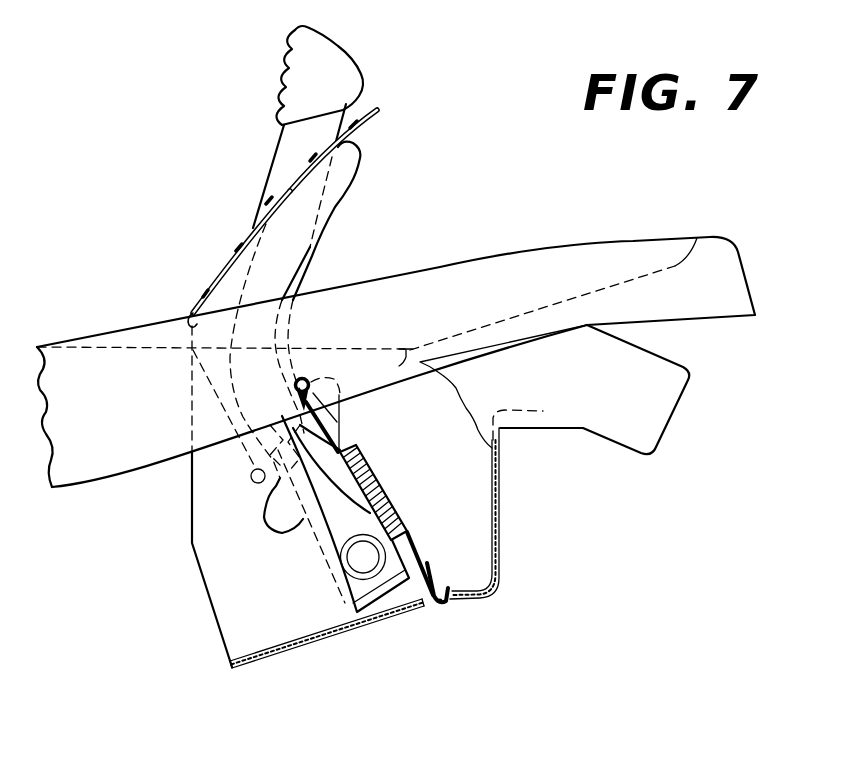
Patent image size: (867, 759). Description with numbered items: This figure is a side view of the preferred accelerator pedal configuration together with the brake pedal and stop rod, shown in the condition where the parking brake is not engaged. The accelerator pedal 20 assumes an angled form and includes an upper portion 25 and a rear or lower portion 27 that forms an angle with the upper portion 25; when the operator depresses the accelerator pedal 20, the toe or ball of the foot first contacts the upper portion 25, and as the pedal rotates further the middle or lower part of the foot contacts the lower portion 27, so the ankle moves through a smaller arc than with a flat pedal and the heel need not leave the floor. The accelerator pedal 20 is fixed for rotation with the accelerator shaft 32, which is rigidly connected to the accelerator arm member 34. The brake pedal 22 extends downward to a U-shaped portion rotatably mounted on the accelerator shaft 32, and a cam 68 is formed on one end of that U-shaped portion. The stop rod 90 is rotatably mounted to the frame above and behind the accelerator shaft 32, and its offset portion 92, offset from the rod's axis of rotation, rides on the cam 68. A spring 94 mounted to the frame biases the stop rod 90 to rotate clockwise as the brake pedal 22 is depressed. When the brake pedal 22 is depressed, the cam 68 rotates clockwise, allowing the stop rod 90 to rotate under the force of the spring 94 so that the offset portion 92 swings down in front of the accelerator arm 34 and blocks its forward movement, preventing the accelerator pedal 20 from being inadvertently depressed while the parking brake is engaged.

The accelerator pedal 20 is at (376, 143).
The brake pedal 22 is at (340, 46).
The upper portion 25 is at (368, 108).
The rear portion 27 is at (223, 268).
The accelerator shaft 32 is at (350, 566).
The accelerator arm member 34 is at (289, 407).
The cam 68 is at (270, 501).
The stop rod 90 is at (250, 476).
The offset portion 92 is at (305, 377).
The spring 94 is at (380, 483).